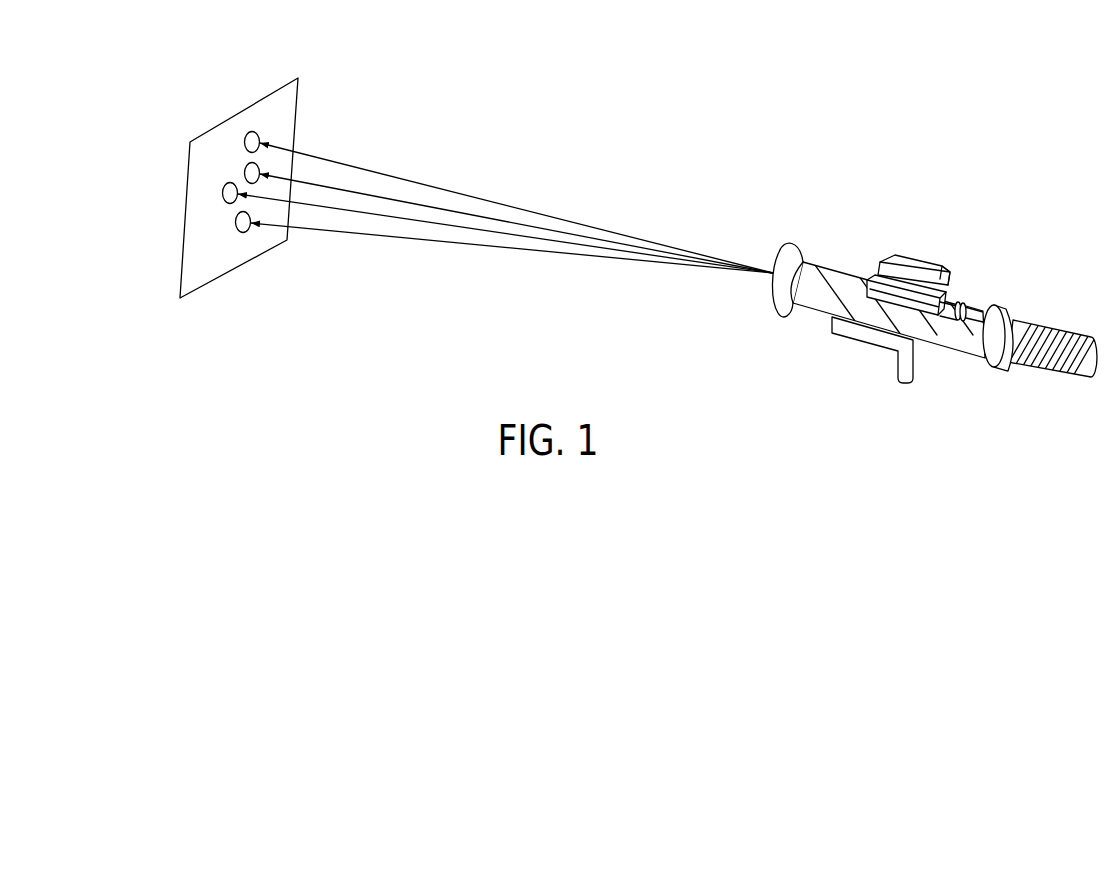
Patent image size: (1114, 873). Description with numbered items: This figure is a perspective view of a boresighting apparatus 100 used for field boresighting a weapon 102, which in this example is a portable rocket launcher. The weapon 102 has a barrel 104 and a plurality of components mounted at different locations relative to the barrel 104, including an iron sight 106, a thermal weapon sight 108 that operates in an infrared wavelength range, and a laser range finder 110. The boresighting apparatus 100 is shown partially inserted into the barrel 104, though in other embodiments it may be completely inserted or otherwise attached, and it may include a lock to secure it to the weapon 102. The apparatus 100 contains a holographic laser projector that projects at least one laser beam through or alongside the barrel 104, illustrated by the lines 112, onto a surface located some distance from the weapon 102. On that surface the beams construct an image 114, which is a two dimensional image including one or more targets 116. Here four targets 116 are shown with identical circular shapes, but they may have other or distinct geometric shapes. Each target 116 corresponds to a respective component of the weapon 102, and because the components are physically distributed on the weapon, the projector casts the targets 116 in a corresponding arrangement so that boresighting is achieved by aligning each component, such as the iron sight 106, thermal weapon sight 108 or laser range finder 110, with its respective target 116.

The boresighting apparatus 100 is at (1042, 352).
The weapon 102 is at (899, 224).
The barrel 104 is at (827, 275).
The iron sight 106 is at (952, 278).
The thermal weapon sight 108 is at (918, 263).
The laser range finder 110 is at (853, 328).
The lines 112 is at (400, 236).
The image 114 is at (285, 105).
The targets 116 is at (236, 221).